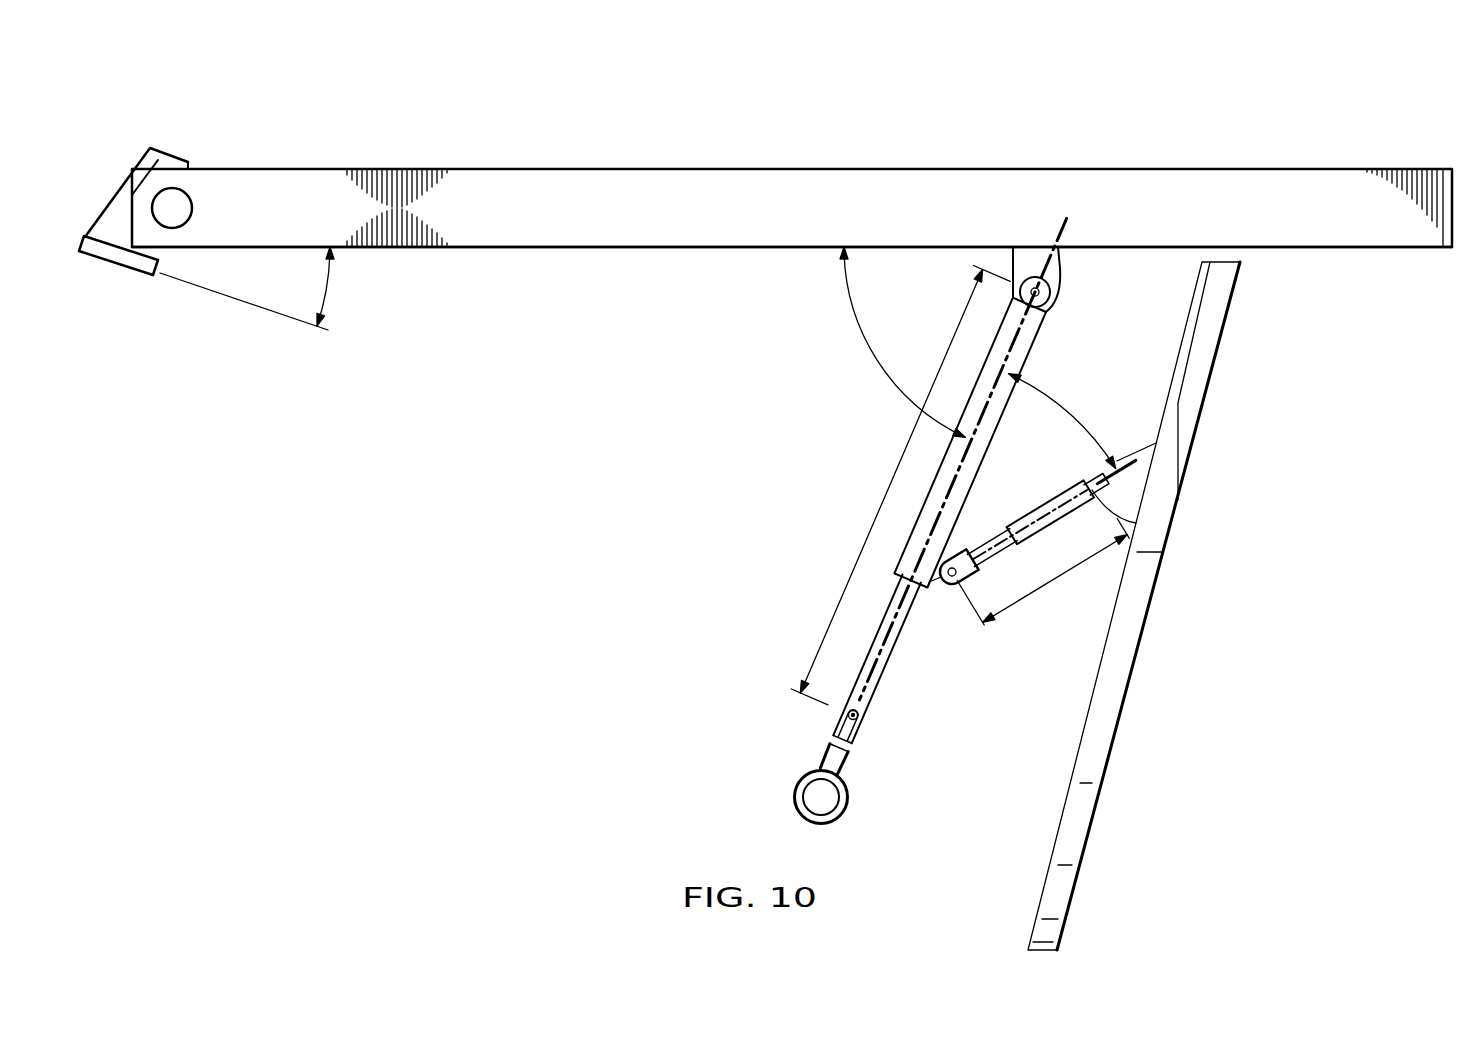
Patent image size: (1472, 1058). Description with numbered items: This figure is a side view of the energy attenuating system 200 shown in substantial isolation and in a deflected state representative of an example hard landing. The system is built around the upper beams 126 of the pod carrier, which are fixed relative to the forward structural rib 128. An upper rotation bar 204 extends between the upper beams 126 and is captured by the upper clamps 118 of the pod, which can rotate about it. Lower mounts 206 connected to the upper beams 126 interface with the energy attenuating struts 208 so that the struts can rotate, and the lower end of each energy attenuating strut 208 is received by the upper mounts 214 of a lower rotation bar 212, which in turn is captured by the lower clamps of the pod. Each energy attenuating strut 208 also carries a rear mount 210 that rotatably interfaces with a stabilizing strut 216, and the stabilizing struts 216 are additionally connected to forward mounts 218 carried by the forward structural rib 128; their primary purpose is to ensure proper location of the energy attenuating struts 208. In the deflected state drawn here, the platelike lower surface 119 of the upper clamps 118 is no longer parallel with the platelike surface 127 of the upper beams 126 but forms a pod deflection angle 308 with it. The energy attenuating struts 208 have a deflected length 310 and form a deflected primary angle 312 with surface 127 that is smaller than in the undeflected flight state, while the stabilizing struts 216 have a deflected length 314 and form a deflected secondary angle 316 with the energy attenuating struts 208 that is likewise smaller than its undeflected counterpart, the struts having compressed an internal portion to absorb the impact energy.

The upper clamps 118 is at (130, 172).
The lower surface 119 is at (113, 265).
The upper beams 126 is at (863, 177).
The surface 127 is at (505, 248).
The forward structural rib 128 is at (1110, 753).
The energy attenuating system 200 is at (511, 106).
The upper rotation bar 204 is at (193, 208).
The lower mounts 206 is at (1028, 262).
The energy attenuating struts 208 is at (897, 653).
The rear mount 210 is at (937, 587).
The lower rotation bar 212 is at (817, 797).
The upper mounts 214 is at (858, 740).
The stabilizing struts 216 is at (1050, 505).
The forward mounts 218 is at (1135, 498).
The pod deflection angle 308 is at (327, 297).
The deflected length 310 is at (893, 478).
The deflected primary angle 312 is at (877, 363).
The deflected length 314 is at (1053, 580).
The deflected secondary angle 316 is at (1072, 413).